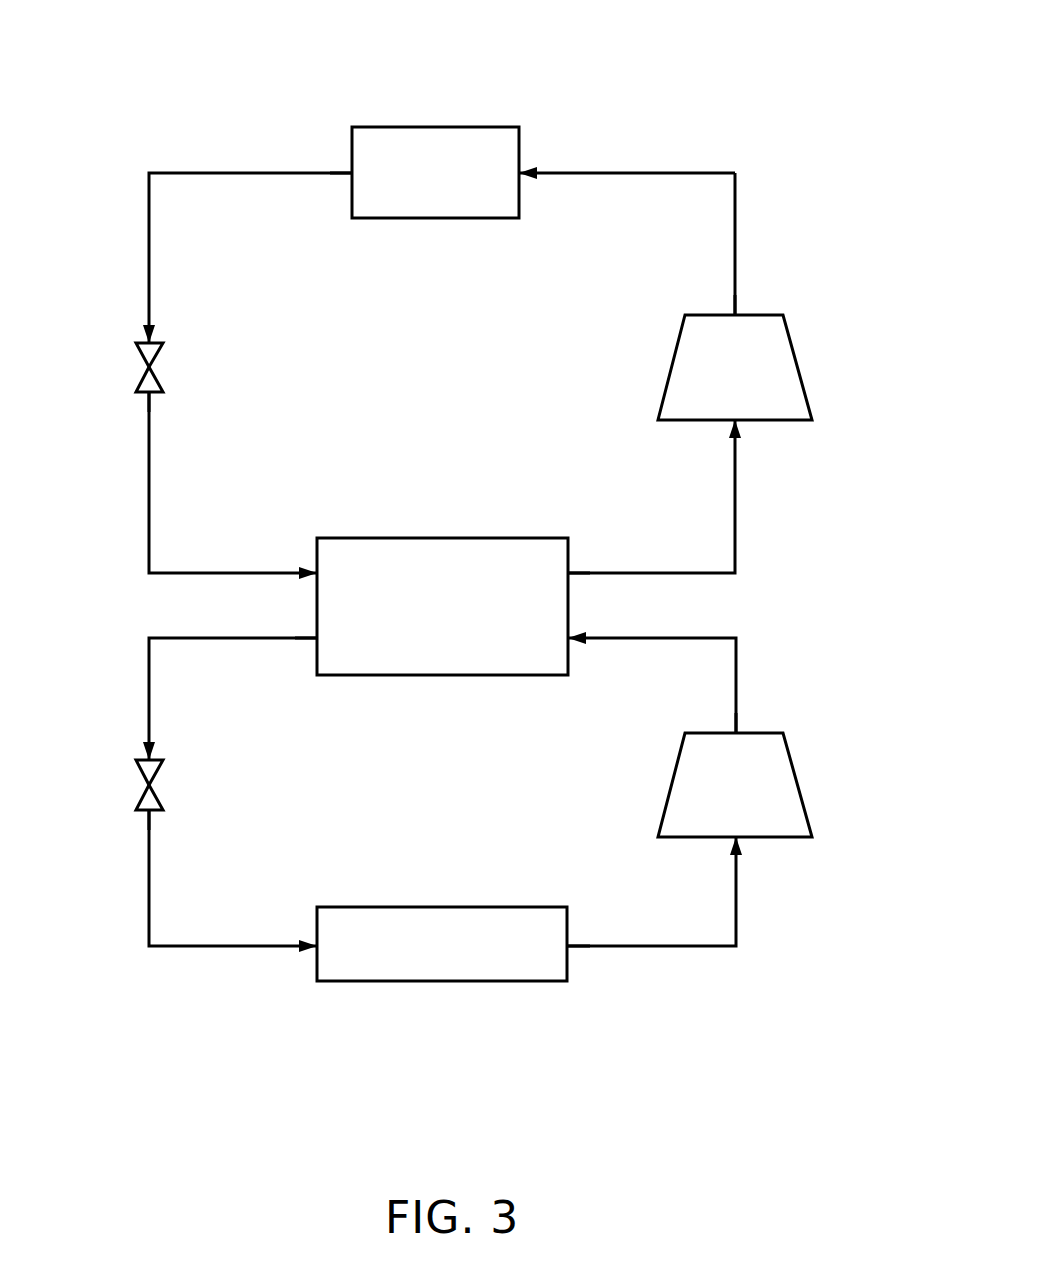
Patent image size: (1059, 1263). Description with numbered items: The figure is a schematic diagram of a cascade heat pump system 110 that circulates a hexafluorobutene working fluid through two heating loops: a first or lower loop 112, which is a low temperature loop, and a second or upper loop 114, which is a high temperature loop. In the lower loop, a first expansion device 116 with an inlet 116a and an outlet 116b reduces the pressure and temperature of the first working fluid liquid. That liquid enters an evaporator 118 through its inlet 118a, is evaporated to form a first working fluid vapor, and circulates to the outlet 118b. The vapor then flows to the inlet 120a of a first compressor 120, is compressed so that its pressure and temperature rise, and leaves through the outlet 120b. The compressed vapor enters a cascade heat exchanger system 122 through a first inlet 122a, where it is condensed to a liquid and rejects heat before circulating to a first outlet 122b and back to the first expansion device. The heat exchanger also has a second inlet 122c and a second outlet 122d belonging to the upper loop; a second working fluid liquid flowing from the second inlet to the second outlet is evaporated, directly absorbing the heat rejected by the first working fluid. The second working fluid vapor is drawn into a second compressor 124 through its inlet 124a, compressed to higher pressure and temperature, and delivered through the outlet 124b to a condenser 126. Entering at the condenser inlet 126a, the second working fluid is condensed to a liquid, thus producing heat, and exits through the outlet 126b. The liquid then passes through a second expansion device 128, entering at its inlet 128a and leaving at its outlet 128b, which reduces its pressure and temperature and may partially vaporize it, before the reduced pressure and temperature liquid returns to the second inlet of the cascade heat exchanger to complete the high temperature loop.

The cascade heat pump system 110 is at (652, 68).
The lower loop 112 is at (478, 816).
The upper loop 114 is at (478, 401).
The first expansion device 116 is at (153, 785).
The inlet 116a is at (147, 758).
The outlet 116b is at (148, 811).
The evaporator 118 is at (410, 973).
The inlet 118a is at (316, 950).
The outlet 118b is at (570, 948).
The first compressor 120 is at (797, 790).
The inlet 120a is at (741, 843).
The outlet 120b is at (737, 732).
The cascade heat exchanger system 122 is at (410, 650).
The first inlet 122a is at (570, 645).
The first outlet 122b is at (316, 642).
The second inlet 122c is at (316, 570).
The second outlet 122d is at (570, 568).
The second compressor 124 is at (796, 360).
The inlet 124a is at (741, 428).
The outlet 124b is at (737, 314).
The condenser 126 is at (462, 210).
The inlet 126a is at (521, 170).
The outlet 126b is at (352, 170).
The second expansion device 128 is at (153, 367).
The inlet 128a is at (147, 340).
The outlet 128b is at (148, 393).